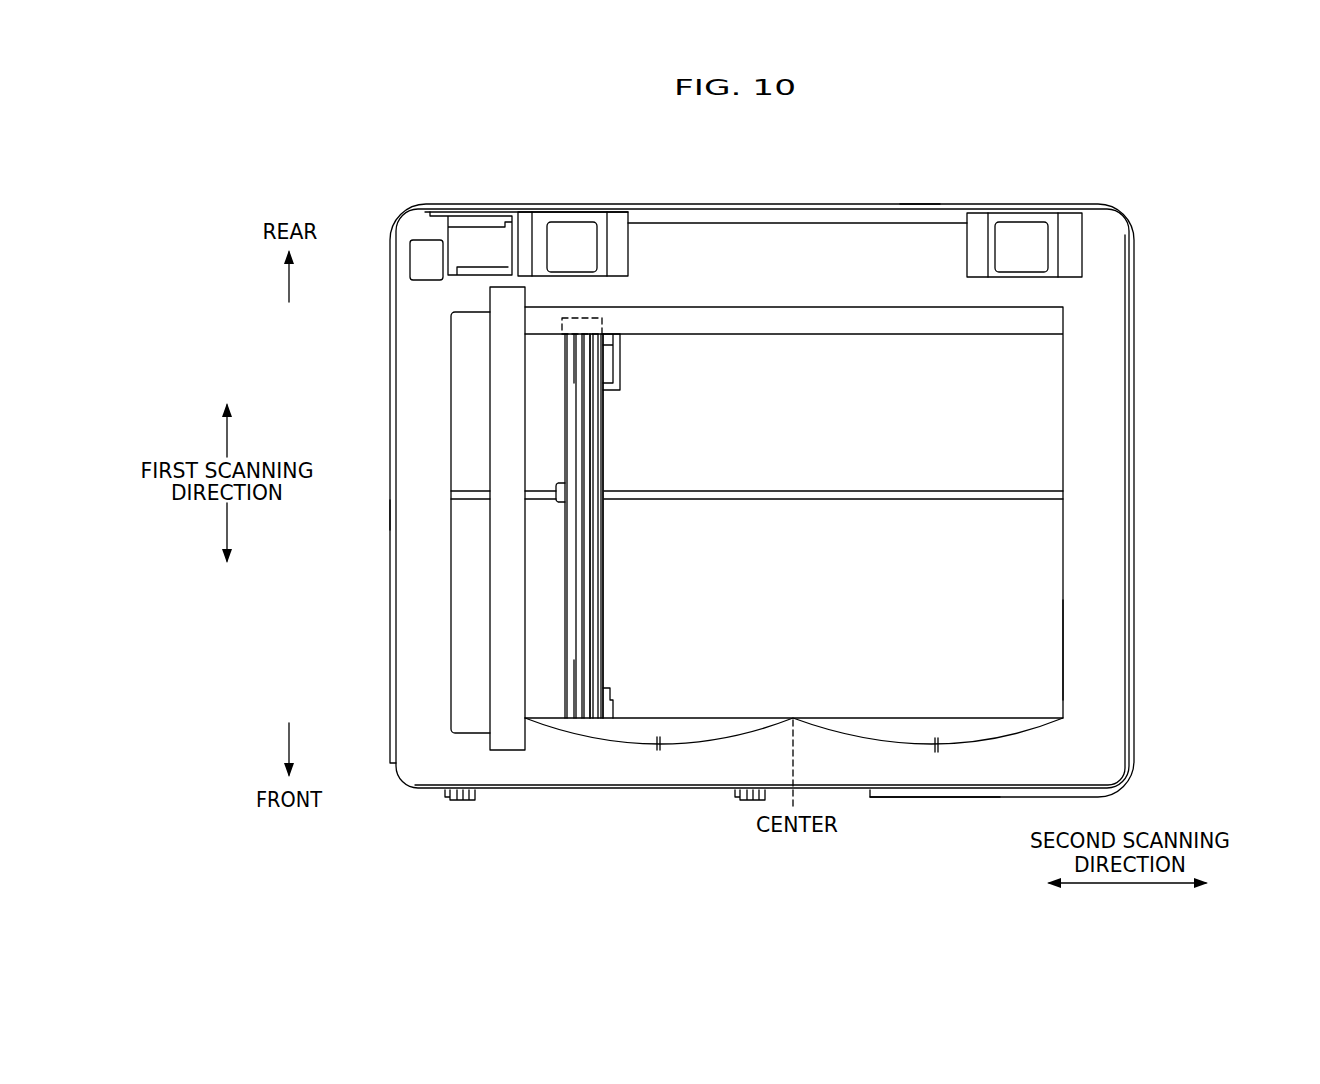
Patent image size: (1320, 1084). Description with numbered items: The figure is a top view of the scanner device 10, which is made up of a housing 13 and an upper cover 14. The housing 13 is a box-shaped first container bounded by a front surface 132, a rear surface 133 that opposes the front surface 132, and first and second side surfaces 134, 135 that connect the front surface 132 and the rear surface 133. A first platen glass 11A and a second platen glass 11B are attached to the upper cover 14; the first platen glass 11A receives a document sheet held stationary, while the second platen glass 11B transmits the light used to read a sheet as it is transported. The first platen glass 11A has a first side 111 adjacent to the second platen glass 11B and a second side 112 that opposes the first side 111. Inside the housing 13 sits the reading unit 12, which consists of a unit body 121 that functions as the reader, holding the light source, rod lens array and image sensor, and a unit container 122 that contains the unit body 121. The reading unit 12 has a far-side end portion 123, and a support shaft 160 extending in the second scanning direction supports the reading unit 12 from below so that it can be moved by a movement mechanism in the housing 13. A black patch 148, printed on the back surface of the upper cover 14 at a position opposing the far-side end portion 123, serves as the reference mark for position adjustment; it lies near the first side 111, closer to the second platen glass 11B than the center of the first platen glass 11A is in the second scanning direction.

The scanner device 10 is at (1165, 220).
The first platen glass 11A is at (703, 700).
The second platen glass 11B is at (480, 715).
The reading unit 12 is at (625, 685).
The housing 13 is at (1148, 535).
The upper cover 14 is at (853, 260).
The first side 111 is at (525, 623).
The second side 112 is at (1063, 632).
The unit body 121 is at (590, 437).
The unit container 122 is at (607, 407).
The far-side end portion 123 is at (639, 350).
The front surface 132 is at (975, 797).
The rear surface 133 is at (917, 205).
The first side surface 134 is at (390, 508).
The second side surface 135 is at (1135, 583).
The black patch 148 is at (579, 318).
The support shaft 160 is at (945, 487).